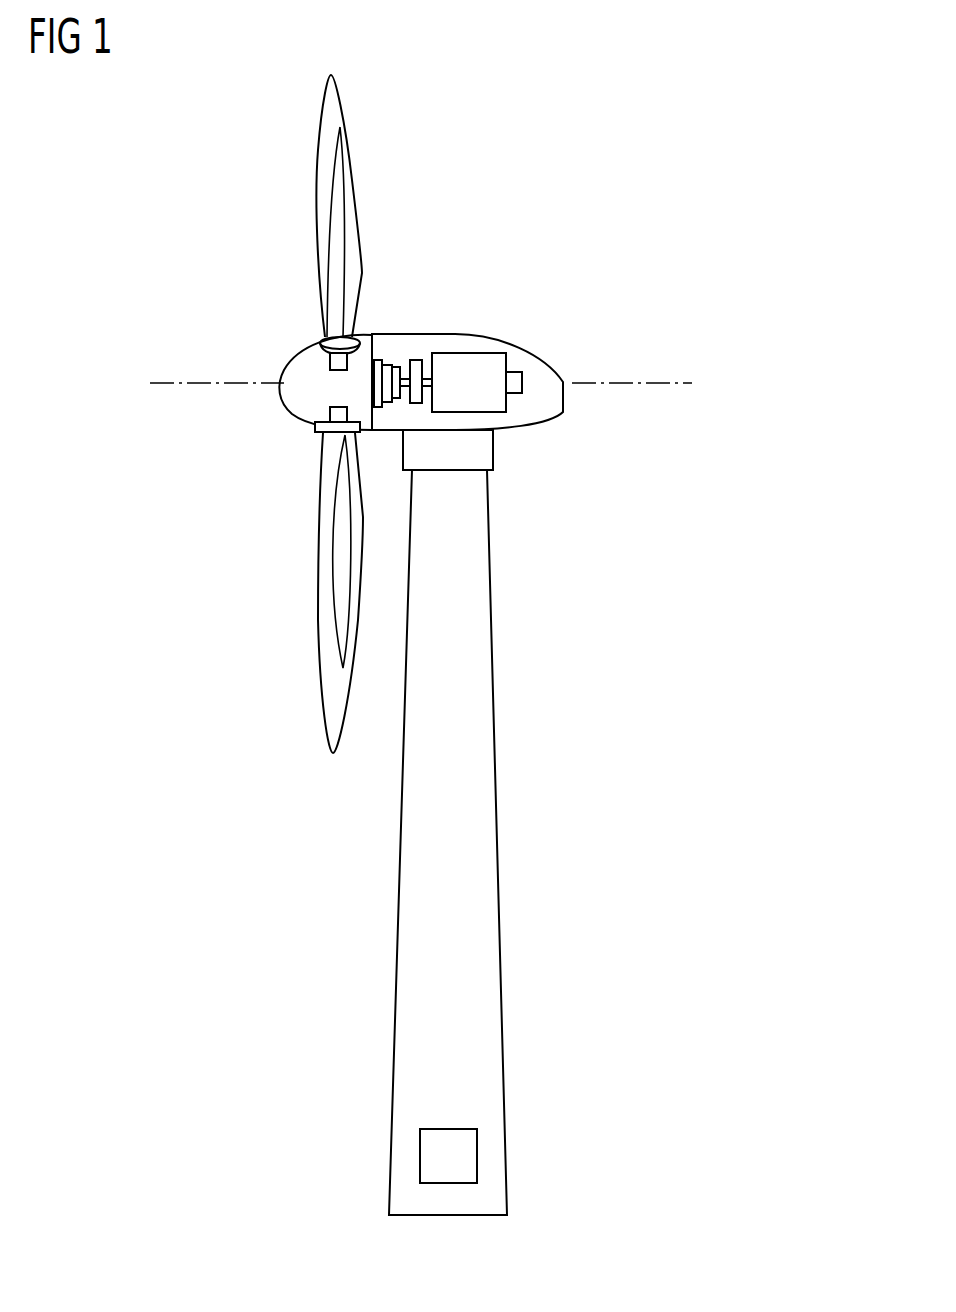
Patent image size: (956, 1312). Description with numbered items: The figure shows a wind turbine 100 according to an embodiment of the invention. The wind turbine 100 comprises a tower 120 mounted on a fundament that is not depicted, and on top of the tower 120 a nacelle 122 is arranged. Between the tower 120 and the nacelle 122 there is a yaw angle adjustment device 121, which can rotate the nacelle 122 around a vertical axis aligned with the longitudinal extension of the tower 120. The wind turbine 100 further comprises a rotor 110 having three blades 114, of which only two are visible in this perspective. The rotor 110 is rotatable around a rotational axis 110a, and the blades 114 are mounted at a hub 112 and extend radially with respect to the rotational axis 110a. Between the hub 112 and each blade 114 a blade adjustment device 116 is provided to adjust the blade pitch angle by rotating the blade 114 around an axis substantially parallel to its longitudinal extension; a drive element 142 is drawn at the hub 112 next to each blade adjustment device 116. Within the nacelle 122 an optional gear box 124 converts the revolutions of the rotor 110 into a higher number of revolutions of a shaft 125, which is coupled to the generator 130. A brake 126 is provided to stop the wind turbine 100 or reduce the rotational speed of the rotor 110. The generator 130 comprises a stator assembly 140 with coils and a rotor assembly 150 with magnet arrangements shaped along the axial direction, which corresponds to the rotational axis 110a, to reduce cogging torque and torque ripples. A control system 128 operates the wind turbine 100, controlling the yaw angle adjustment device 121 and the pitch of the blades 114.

The wind turbine 100 is at (630, 178).
The rotor 110 is at (218, 295).
The rotational axis 110a is at (158, 383).
The hub 112 is at (287, 368).
The blades 114 is at (318, 175).
The blade adjustment device 116 is at (322, 340).
The pitch drive 142 is at (335, 366).
The tower 120 is at (490, 560).
The yaw angle adjustment device 121 is at (494, 452).
The nacelle 122 is at (538, 350).
The gear box 124 is at (385, 365).
The shaft 125 is at (405, 388).
The brake 126 is at (418, 362).
The stator assembly 140 is at (475, 352).
The rotor assembly 150 is at (523, 385).
The generator 130 is at (535, 412).
The control system 128 is at (468, 1174).